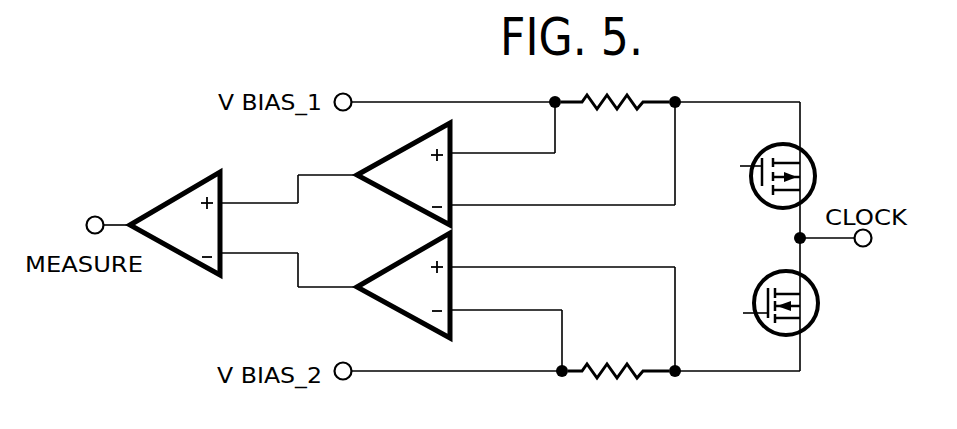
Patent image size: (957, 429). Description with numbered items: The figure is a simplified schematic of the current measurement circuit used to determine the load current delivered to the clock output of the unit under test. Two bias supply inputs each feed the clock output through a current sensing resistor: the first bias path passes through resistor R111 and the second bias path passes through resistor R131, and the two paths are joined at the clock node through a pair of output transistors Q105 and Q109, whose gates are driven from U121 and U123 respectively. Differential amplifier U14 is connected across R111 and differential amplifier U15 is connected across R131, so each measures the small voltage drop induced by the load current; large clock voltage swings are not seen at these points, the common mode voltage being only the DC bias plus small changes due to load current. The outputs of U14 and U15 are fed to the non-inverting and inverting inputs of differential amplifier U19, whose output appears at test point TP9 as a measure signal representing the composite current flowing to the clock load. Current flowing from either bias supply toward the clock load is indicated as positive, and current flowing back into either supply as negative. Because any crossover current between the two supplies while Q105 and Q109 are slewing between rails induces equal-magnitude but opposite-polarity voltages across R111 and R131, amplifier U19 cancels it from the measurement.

The measure test point TP9 is at (90, 208).
The differential amplifier U19 is at (175, 218).
The differential amplifier U14 is at (392, 174).
The differential amplifier U15 is at (392, 285).
The current sensing resistor R111 is at (615, 121).
The current sensing resistor R131 is at (618, 355).
The transistor Q105 is at (827, 156).
The transistor Q109 is at (827, 321).
The gate drive source (FIG. 3) U121 is at (723, 167).
The gate drive source (FIG. 3) U123 is at (724, 316).